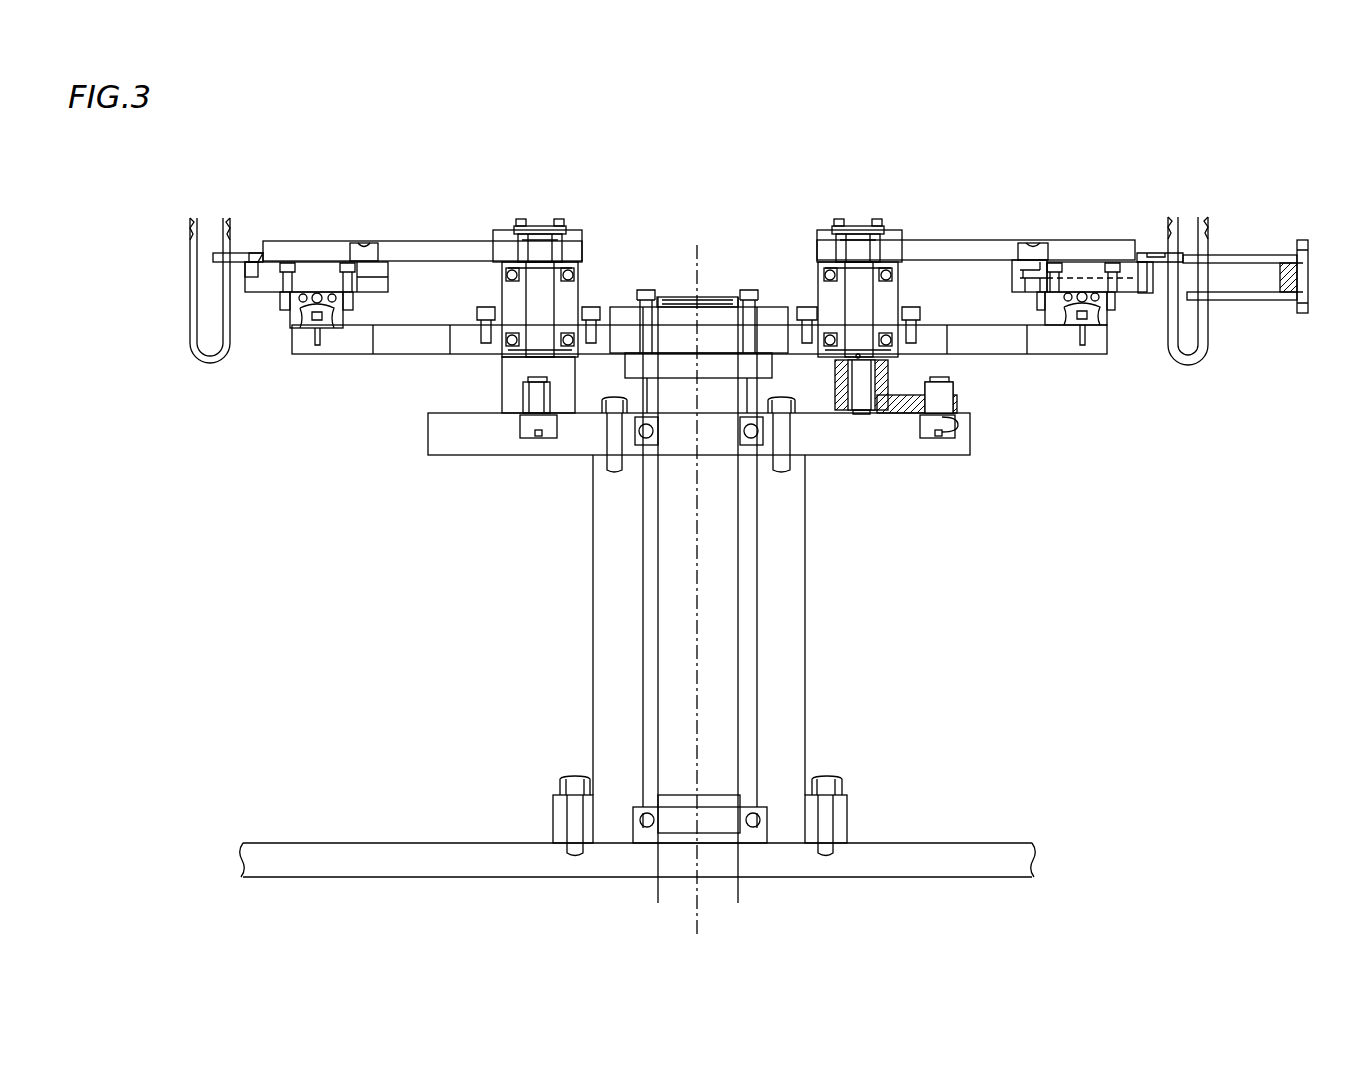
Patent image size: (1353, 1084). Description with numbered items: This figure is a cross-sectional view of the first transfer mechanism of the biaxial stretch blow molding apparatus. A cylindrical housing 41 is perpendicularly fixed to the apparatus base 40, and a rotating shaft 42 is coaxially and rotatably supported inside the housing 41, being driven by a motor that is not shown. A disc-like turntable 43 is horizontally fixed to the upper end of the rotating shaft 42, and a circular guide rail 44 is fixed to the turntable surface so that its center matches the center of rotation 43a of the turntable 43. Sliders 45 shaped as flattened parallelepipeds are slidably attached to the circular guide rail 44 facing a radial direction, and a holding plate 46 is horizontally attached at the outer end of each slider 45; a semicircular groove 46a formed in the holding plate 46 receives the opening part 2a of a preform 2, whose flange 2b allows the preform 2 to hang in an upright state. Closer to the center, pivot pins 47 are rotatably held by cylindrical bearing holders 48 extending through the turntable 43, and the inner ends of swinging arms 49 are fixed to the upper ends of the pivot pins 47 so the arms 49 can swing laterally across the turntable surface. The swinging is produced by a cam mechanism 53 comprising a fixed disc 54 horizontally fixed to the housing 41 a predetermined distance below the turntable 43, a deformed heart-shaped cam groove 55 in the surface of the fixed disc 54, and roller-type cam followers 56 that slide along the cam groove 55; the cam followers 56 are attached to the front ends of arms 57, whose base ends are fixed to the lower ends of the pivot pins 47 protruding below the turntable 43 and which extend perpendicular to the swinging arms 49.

The preform 2 is at (749, 279).
The opening part 2a is at (1210, 228).
The flange 2b is at (1208, 253).
The apparatus base 40 is at (957, 841).
The cylindrical housing 41 is at (783, 668).
The rotating shaft 42 is at (712, 633).
The turntable 43 is at (1037, 342).
The center of rotation 43a is at (700, 556).
The circular guide rail 44 is at (1072, 327).
The slider 45 is at (1128, 285).
The holding plate 46 is at (1155, 252).
The semicircular groove 46a is at (1172, 253).
The pivot pin 47 is at (860, 306).
The bearing holder 48 is at (820, 295).
The swinging arm 49 is at (990, 252).
The cam mechanism 53 is at (756, 460).
The fixed disc 54 is at (902, 445).
The cam groove 55 is at (955, 422).
The cam follower 56 is at (928, 427).
The arm 57 is at (980, 421).